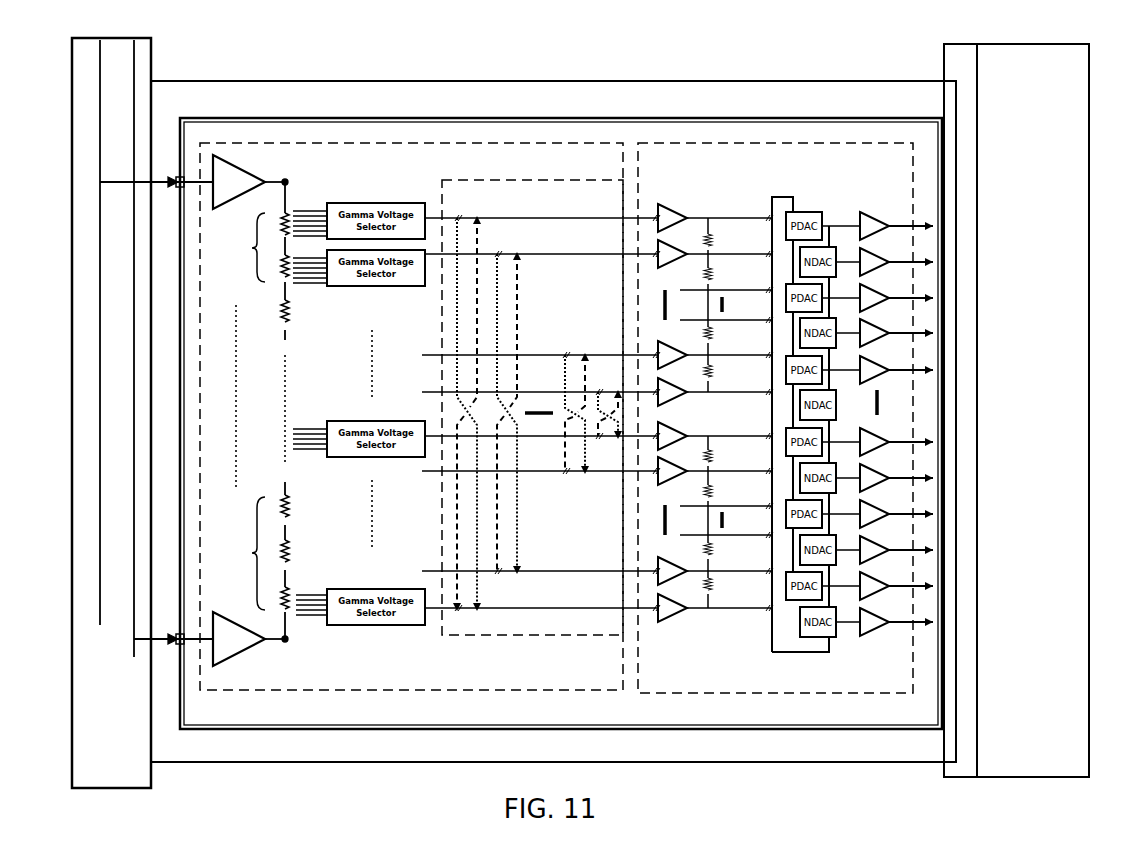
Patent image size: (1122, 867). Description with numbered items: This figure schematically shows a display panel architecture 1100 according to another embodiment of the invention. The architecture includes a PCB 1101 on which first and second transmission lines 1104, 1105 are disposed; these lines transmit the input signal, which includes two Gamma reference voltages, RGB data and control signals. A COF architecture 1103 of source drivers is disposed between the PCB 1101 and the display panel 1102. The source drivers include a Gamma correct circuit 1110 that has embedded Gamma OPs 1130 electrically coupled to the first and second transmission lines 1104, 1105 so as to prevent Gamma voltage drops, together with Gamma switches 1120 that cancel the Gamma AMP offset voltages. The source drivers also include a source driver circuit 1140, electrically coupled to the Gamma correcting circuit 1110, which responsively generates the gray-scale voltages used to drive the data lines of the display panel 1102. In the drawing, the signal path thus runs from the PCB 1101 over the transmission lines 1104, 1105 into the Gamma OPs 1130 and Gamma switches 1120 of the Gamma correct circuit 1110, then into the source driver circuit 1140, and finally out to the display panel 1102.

The display panel architecture 1100 is at (580, 54).
The PCB 1101 is at (88, 766).
The display panel 1102 is at (1026, 754).
The COF architecture 1103 is at (871, 758).
The first transmission line 1104 is at (100, 72).
The second transmission line 1105 is at (134, 102).
The Gamma correct circuit 1110 is at (398, 143).
The Gamma switches 1120 is at (537, 180).
The Gamma OP 1130 is at (230, 182).
The source driver circuit 1140 is at (792, 143).